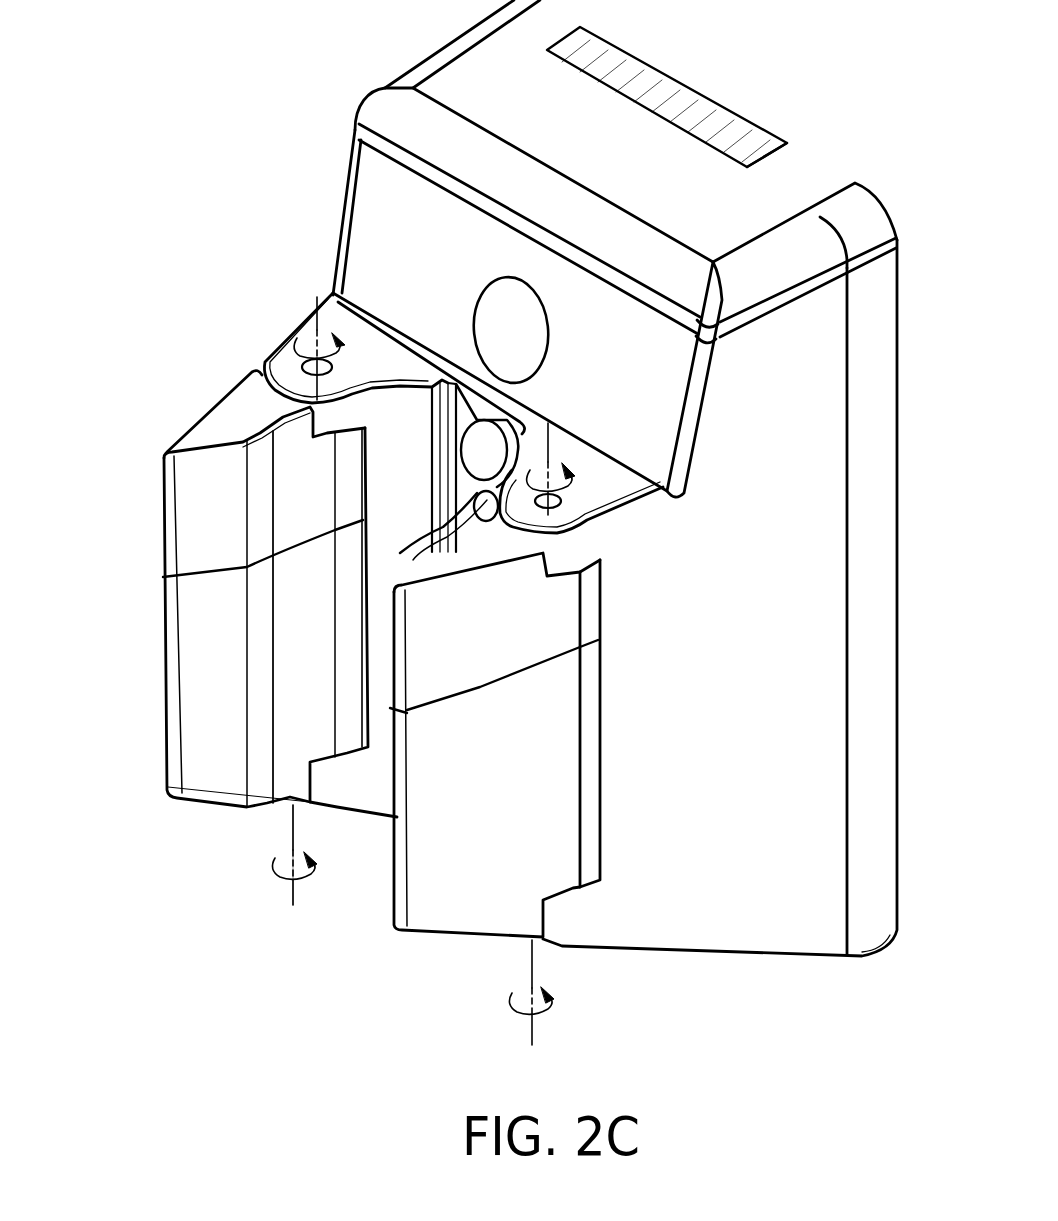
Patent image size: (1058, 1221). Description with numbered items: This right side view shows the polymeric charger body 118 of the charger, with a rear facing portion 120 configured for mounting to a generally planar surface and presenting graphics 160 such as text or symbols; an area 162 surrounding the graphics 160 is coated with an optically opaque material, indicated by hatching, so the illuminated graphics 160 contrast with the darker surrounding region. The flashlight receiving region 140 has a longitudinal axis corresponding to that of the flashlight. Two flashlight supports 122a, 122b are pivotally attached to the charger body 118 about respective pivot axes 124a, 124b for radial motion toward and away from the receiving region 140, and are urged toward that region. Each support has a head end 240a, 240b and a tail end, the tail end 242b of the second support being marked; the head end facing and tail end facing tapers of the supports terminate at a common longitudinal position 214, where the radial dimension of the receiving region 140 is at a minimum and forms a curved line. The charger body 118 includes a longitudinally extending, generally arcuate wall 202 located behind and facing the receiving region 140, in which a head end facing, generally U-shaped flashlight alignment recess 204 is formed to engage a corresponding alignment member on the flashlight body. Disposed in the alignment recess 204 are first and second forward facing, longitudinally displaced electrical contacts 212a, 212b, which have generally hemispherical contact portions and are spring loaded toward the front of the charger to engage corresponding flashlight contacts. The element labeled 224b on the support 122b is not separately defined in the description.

The rear facing portion 120 is at (543, 114).
The charger body 118 is at (750, 702).
The graphics 160 is at (677, 91).
The area surrounding the graphics 162 is at (763, 144).
The pivot axis 124b is at (303, 342).
The pivot axis 124a is at (557, 467).
The flashlight alignment recess 204 is at (465, 403).
The first electrical contact 212a is at (465, 452).
The second electrical contact 212b is at (463, 500).
The arcuate wall 202 is at (387, 623).
The flashlight support 122b is at (190, 692).
The flashlight support 122a is at (525, 837).
The head end 240b is at (233, 417).
The head end 240a is at (478, 547).
The panel face 224b is at (300, 503).
The longitudinal position 214 is at (300, 533).
The tail end 242b is at (245, 818).
The flashlight receiving region 140 is at (345, 900).